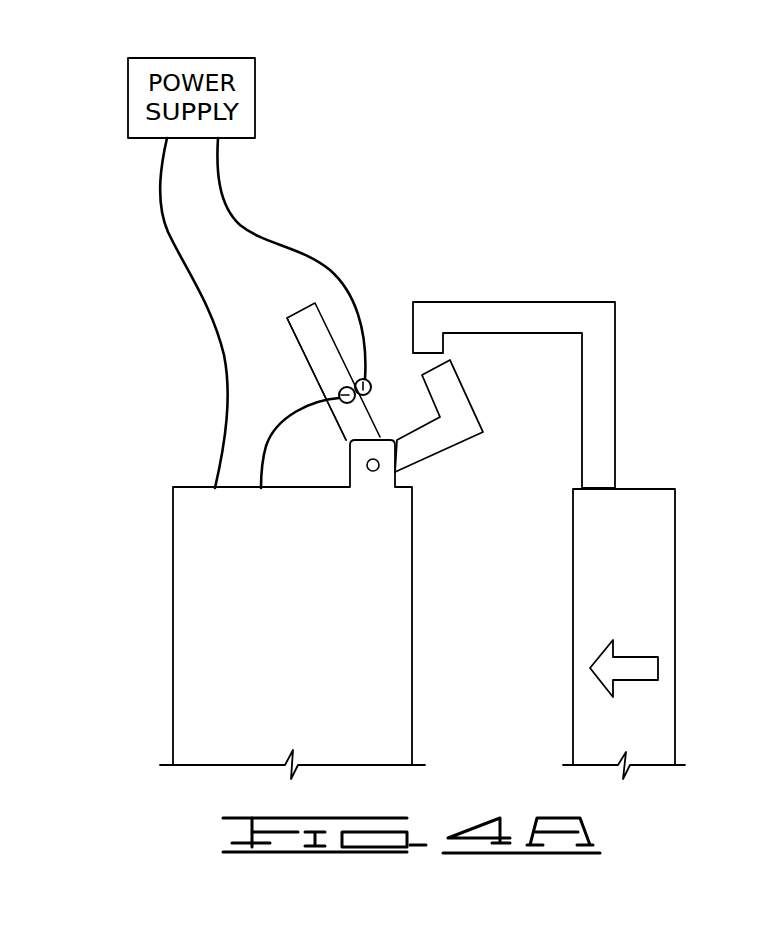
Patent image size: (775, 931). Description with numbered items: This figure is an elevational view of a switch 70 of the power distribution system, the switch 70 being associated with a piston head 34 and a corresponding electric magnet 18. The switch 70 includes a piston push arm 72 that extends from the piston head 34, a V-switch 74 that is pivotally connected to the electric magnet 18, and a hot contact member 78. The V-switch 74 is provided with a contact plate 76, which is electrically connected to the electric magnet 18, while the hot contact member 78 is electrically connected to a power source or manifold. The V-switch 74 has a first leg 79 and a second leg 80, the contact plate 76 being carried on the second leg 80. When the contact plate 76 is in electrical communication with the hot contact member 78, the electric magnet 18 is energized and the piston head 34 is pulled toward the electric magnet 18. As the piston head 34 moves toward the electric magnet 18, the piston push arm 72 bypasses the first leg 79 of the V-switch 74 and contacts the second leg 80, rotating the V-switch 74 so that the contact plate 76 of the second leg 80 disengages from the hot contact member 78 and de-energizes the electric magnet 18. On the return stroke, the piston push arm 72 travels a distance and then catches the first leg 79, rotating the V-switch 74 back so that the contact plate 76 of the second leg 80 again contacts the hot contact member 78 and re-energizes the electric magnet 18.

The electric magnet 18 is at (173, 610).
The piston head 34 is at (675, 593).
The switch 70 is at (416, 236).
The piston push arm 72 is at (538, 302).
The V-switch 74 is at (301, 310).
The contact plate 76 is at (340, 403).
The hot contact member 78 is at (371, 386).
The first leg 79 is at (458, 448).
The second leg 80 is at (306, 357).